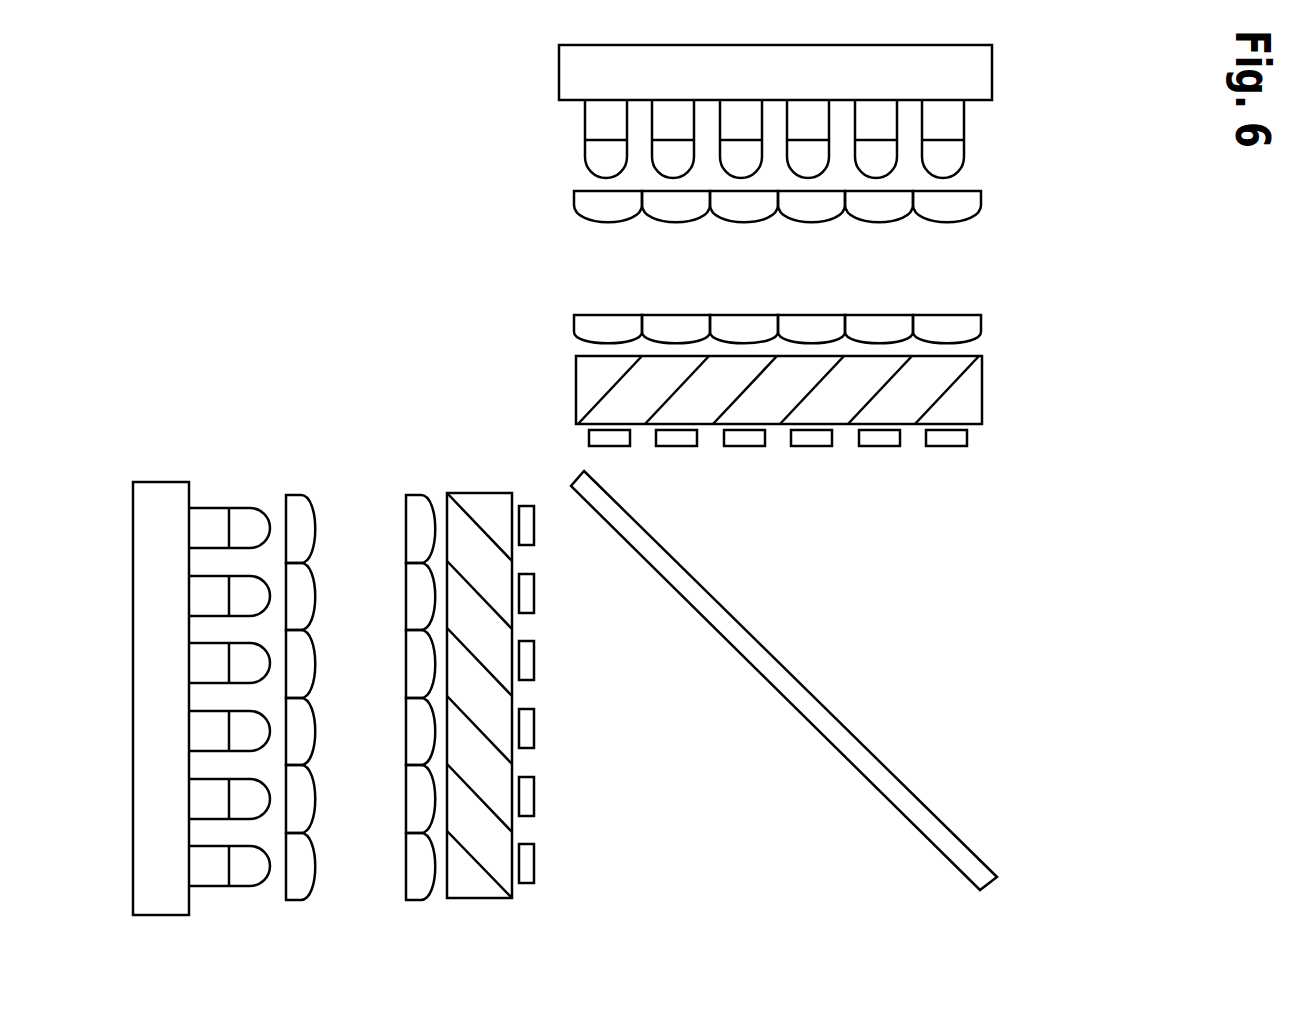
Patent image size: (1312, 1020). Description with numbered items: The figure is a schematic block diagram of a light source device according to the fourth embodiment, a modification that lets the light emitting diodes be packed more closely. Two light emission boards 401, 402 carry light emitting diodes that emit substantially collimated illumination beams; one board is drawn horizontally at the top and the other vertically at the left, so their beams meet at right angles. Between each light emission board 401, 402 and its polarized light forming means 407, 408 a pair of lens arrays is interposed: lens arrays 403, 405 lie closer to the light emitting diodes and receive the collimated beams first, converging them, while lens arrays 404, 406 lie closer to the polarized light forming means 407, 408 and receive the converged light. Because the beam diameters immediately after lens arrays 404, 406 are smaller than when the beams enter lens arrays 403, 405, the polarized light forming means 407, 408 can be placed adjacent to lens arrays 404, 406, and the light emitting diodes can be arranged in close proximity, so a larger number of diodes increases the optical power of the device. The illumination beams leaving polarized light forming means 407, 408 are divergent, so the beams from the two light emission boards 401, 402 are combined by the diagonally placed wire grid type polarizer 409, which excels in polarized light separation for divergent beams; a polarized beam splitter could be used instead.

The light emission board 401 is at (992, 85).
The light emission board 402 is at (165, 482).
The lens array 403 is at (981, 208).
The lens array 404 is at (981, 328).
The lens array 405 is at (298, 495).
The lens array 406 is at (420, 493).
The polarized light forming means 407 is at (982, 392).
The polarized light forming means 408 is at (447, 493).
The wire grid type polarizer 409 is at (975, 855).